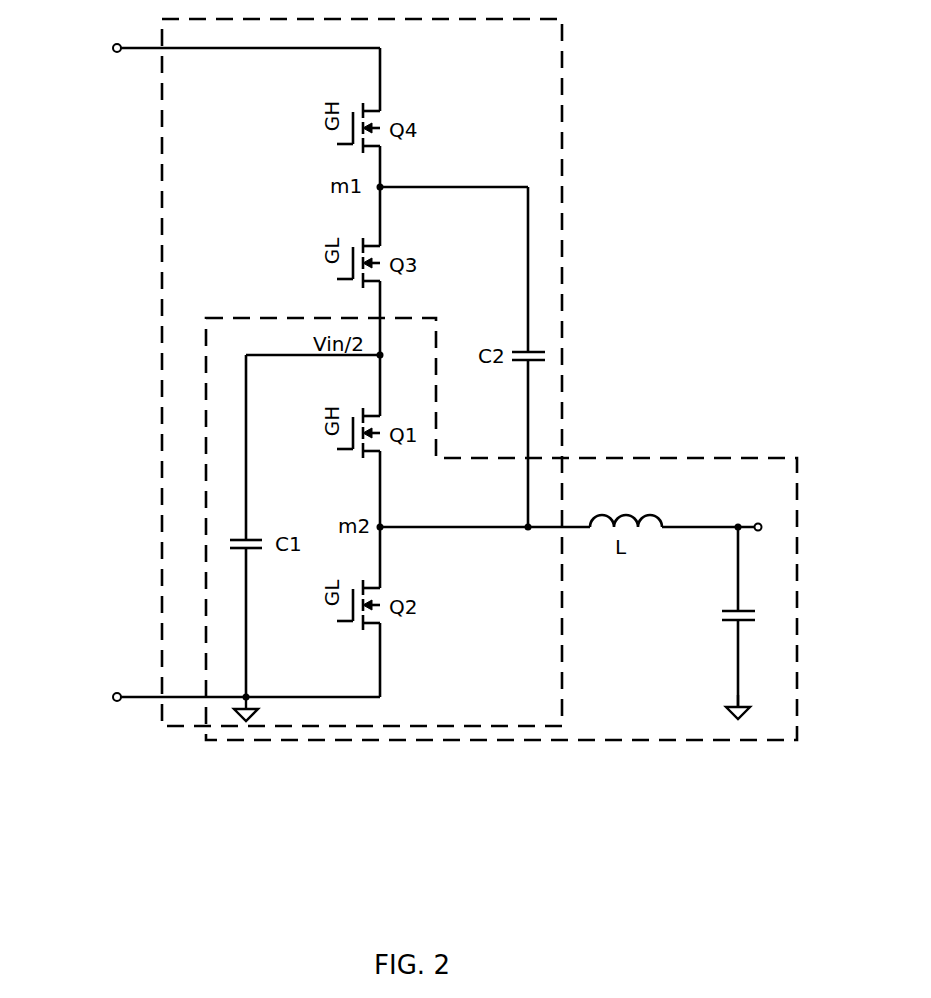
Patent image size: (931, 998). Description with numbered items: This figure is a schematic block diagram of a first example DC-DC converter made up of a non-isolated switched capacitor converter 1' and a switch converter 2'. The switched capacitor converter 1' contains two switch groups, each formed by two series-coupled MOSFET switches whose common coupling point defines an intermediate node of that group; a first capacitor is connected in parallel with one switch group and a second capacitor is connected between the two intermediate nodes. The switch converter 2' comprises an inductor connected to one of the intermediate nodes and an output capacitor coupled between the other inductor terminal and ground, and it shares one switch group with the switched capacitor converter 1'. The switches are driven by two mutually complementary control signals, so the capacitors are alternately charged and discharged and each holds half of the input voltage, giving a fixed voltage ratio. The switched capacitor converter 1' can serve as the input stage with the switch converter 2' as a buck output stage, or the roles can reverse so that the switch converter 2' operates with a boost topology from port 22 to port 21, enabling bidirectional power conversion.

The switched capacitor converter 1' is at (386, 372).
The switch converter 2' is at (501, 529).
The port 21 is at (92, 590).
The port 22 is at (782, 638).